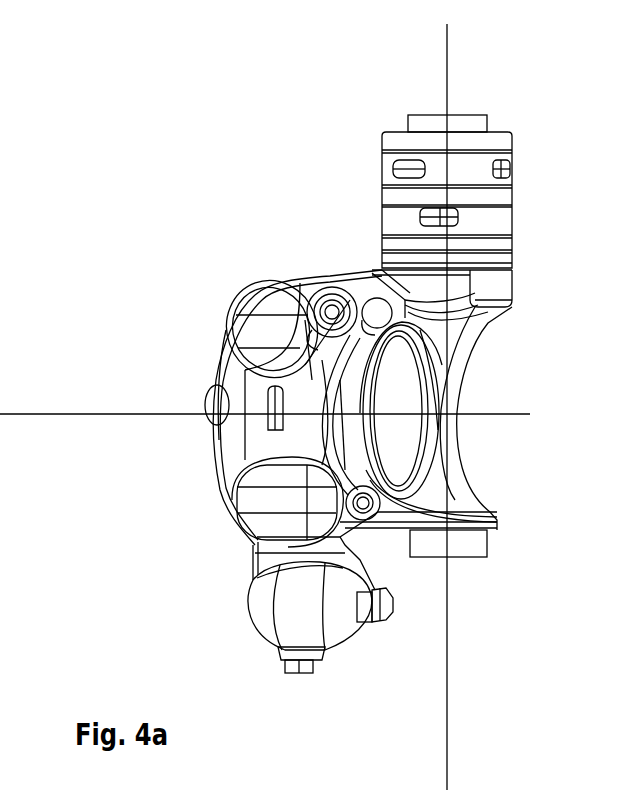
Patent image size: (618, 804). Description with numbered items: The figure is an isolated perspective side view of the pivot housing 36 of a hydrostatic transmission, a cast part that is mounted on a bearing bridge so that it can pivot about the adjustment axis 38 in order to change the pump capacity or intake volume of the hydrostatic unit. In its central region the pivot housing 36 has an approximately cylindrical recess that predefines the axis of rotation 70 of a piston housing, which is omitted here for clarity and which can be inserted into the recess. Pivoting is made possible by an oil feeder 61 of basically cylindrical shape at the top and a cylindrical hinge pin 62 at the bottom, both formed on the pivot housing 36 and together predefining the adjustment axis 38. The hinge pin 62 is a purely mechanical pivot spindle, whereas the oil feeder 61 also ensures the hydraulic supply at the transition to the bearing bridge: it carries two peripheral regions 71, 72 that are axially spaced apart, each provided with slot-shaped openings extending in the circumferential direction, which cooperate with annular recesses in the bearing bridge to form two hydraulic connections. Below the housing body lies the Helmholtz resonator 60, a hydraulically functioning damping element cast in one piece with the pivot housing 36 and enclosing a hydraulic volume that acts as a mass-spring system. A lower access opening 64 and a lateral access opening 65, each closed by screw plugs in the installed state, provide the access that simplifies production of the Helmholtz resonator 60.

The pivot housing 36 is at (205, 272).
The adjustment axis 38 is at (447, 40).
The Helmholtz resonator 60 is at (272, 620).
The oil feeder 61 is at (518, 115).
The hinge pin 62 is at (428, 542).
The lower access opening 64 is at (296, 674).
The lateral access opening 65 is at (390, 620).
The axis of rotation 70 is at (72, 414).
The peripheral region 71 is at (517, 163).
The peripheral region 72 is at (518, 218).